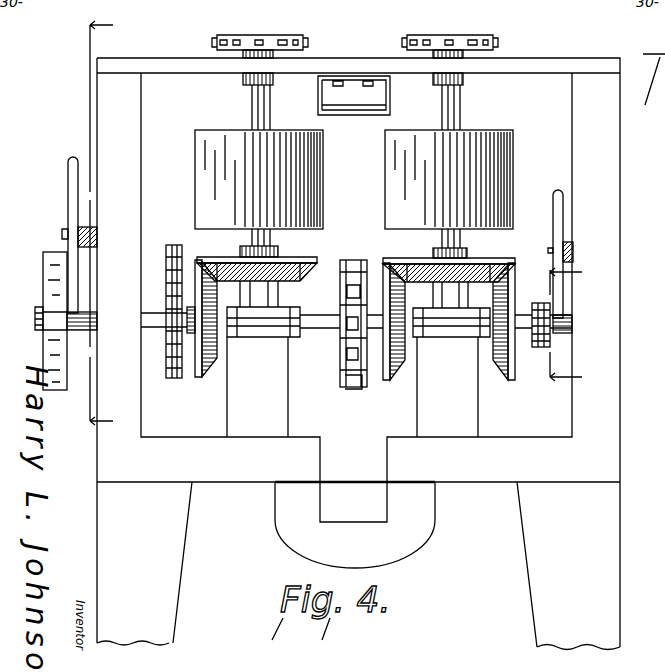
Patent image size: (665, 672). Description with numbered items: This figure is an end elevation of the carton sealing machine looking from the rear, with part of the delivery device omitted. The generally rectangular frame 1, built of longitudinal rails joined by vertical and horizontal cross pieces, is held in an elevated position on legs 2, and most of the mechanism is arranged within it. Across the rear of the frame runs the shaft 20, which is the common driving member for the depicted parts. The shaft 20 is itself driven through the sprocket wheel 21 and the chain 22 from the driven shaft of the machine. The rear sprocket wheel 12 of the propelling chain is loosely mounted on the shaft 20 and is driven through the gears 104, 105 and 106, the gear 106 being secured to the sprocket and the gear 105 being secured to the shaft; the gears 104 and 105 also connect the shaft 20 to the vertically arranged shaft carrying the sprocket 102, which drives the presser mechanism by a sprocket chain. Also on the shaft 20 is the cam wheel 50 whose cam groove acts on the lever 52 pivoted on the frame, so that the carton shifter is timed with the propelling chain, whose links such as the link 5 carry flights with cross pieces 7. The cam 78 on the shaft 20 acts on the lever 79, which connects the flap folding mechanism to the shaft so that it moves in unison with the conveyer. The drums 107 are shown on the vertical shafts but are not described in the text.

The frame 1 is at (108, 449).
The legs 2 is at (172, 600).
The link 5 is at (108, 224).
The cross piece 7 is at (574, 328).
The sprocket wheel 12 is at (345, 380).
The shaft 20 is at (323, 333).
The sprocket wheel 21 is at (170, 290).
The chain 22 is at (180, 245).
The cam wheel 50 is at (55, 282).
The lever 52 is at (68, 213).
The cam 78 is at (555, 322).
The lever 79 is at (563, 228).
The sprocket 102 is at (405, 36).
The gear 104 is at (300, 262).
The gear 105 is at (205, 360).
The gear 106 is at (388, 380).
The drum 107 is at (397, 180).